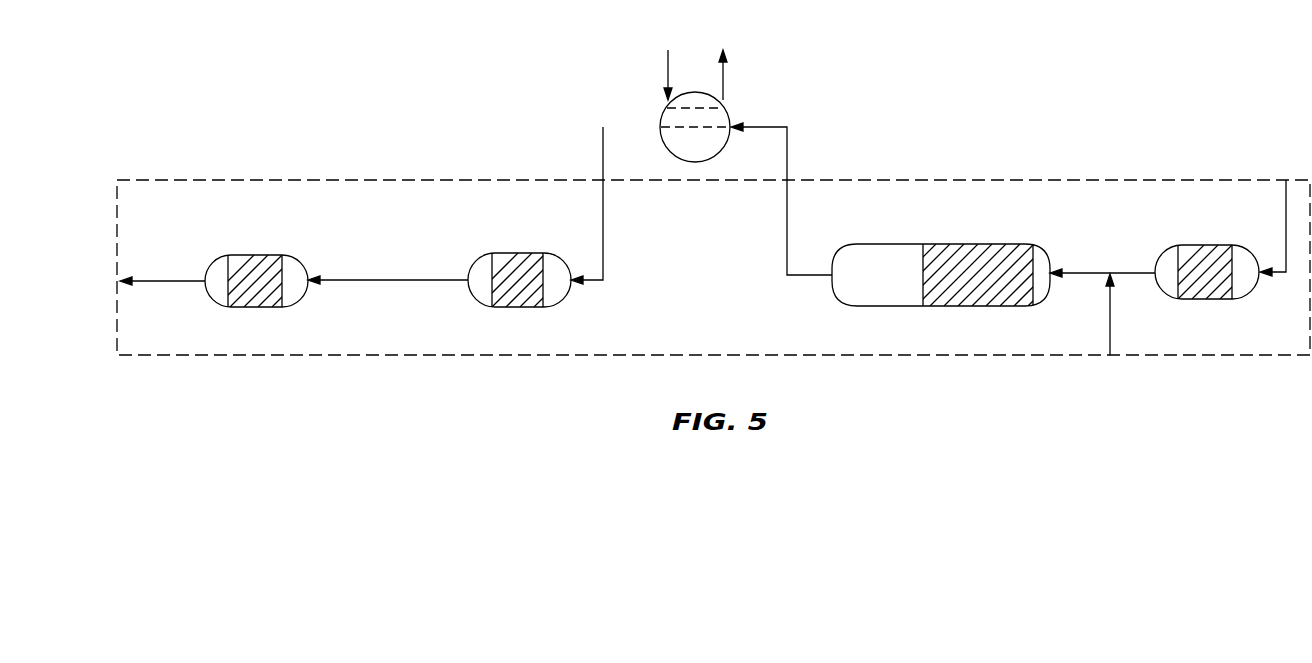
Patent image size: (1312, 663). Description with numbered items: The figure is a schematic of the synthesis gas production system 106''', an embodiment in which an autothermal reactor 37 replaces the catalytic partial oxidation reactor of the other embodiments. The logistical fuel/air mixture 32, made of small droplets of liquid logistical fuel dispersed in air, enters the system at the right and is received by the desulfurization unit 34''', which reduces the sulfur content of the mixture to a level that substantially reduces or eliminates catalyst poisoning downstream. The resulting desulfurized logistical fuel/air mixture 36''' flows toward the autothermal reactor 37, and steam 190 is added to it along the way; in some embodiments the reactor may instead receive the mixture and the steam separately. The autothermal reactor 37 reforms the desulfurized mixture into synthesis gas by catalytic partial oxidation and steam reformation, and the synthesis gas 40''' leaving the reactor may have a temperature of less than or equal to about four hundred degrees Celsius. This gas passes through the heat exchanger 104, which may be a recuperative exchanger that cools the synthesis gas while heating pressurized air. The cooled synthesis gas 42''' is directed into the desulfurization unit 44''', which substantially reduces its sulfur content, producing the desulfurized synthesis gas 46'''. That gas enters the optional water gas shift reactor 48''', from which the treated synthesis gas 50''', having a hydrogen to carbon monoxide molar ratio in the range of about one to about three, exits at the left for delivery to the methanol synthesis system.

The heat exchanger 104 is at (729, 112).
The synthesis gas production system 106''' is at (713, 239).
The logistical fuel/air mixture 32 is at (1273, 192).
The desulfurization unit 34''' is at (1207, 251).
The desulfurized logistical fuel/air mixture 36''' is at (1102, 258).
The autothermal reactor 37 is at (900, 244).
The synthesis gas 40''' is at (776, 199).
The cooled synthesis gas 42''' is at (625, 205).
The desulfurization unit 44''' is at (521, 255).
The desulfurized synthesis gas 46''' is at (388, 264).
The water gas shift reactor 48''' is at (269, 263).
The treated synthesis gas 50''' is at (166, 266).
The steam 190 is at (1120, 316).